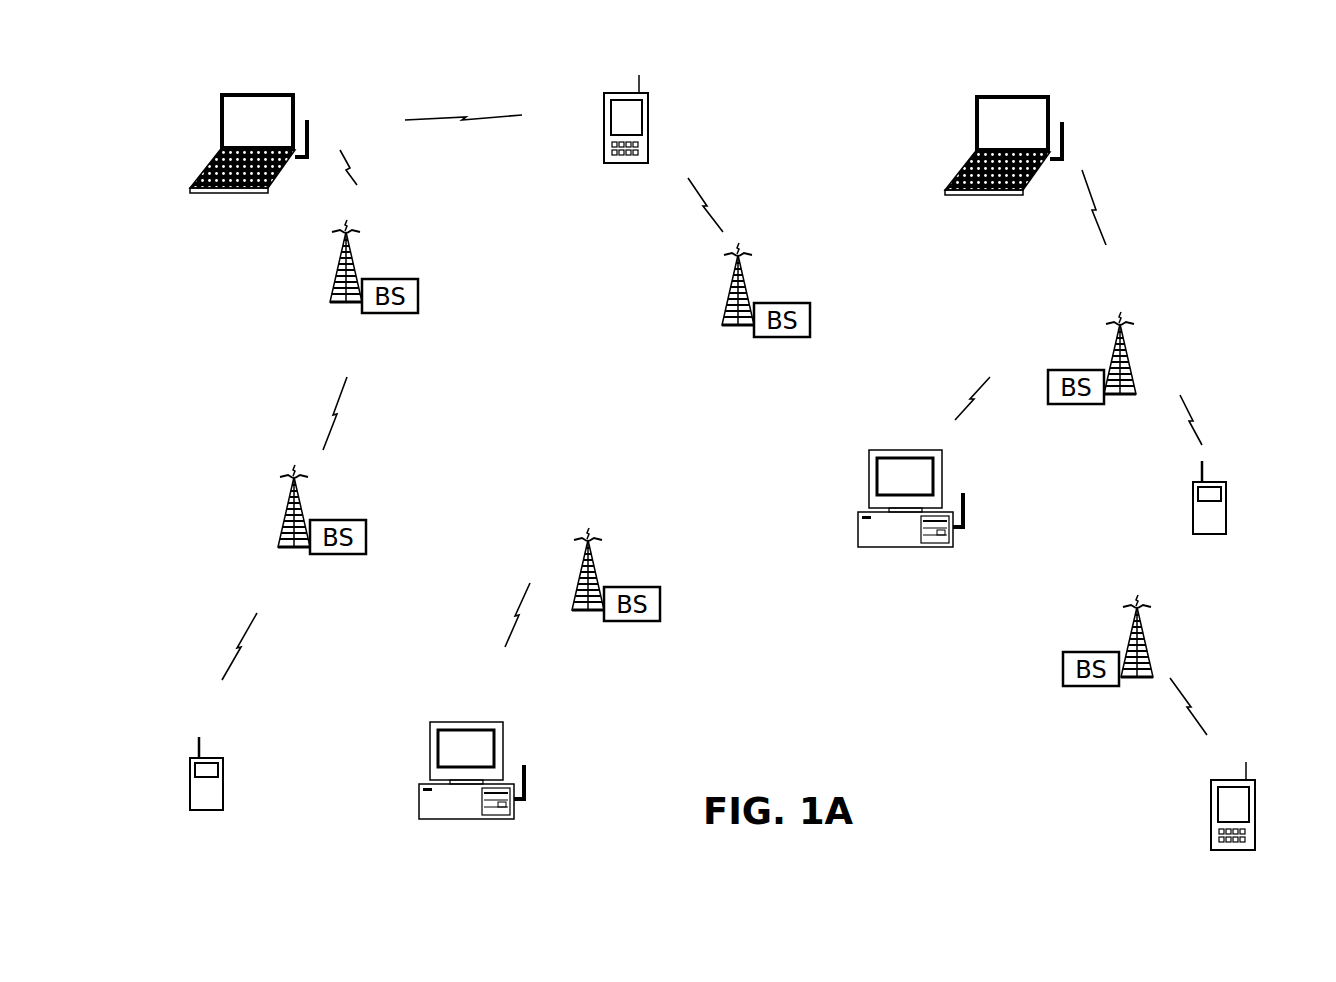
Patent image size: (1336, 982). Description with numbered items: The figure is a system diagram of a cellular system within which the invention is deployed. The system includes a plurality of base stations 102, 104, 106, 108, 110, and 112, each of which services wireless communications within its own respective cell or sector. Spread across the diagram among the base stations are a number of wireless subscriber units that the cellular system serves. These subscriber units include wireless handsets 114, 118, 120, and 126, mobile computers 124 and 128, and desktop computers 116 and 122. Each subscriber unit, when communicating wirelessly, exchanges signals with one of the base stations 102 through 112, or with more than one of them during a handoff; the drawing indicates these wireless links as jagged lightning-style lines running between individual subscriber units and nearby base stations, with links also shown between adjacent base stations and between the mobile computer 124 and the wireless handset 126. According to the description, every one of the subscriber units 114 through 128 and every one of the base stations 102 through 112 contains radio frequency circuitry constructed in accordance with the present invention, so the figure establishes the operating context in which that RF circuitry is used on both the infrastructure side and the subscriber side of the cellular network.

The base station 102 is at (343, 520).
The base station 104 is at (398, 279).
The base station 106 is at (642, 587).
The base station 108 is at (792, 303).
The base station 110 is at (1065, 369).
The base station 112 is at (1082, 652).
The wireless handset 114 is at (225, 782).
The desktop computer 116 is at (500, 752).
The wireless handset 118 is at (1253, 831).
The wireless handset 120 is at (1226, 505).
The desktop computer 122 is at (857, 528).
The mobile computer 124 is at (265, 93).
The wireless handset 126 is at (648, 143).
The mobile computer 128 is at (1020, 94).